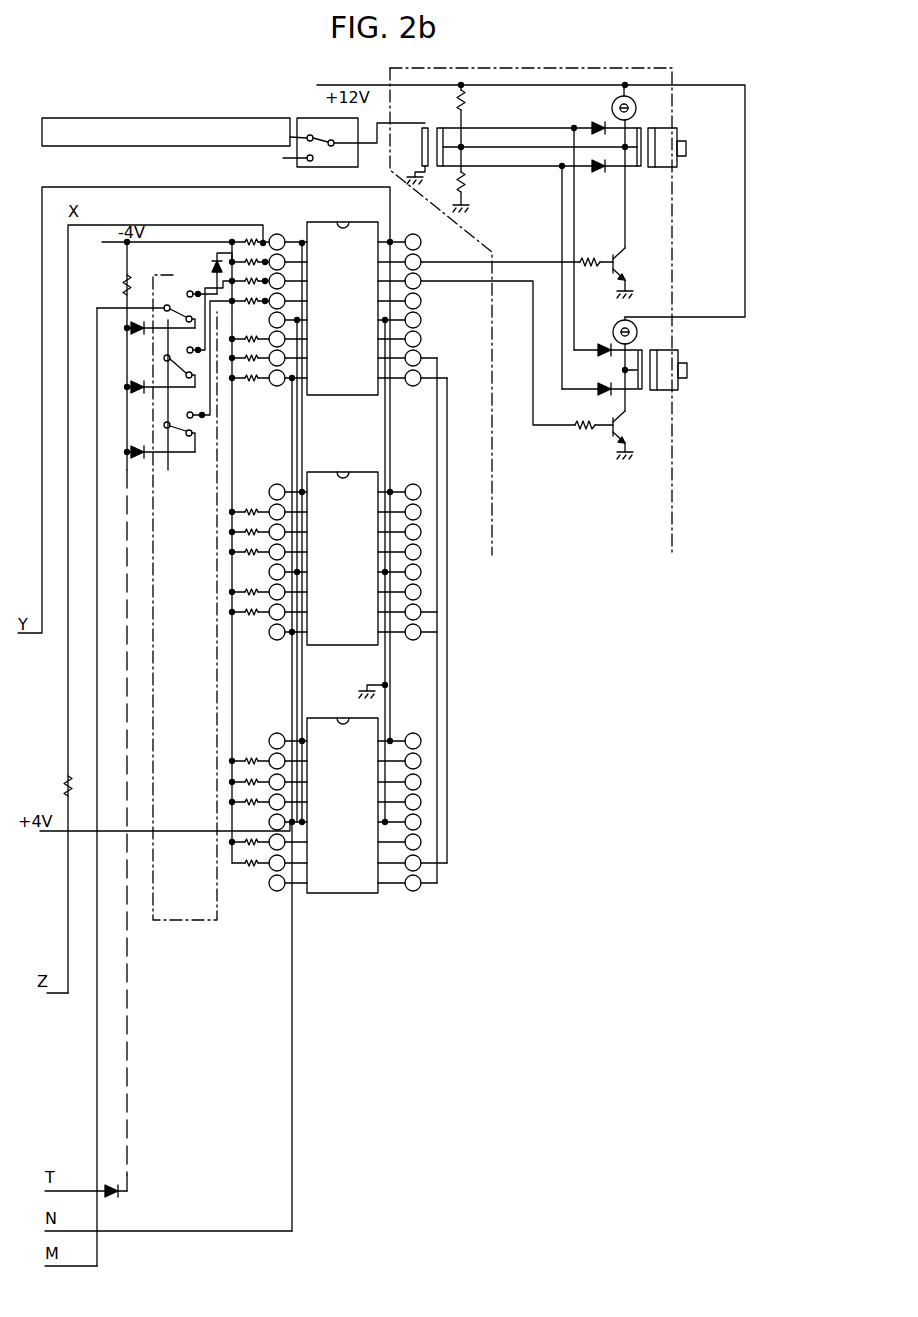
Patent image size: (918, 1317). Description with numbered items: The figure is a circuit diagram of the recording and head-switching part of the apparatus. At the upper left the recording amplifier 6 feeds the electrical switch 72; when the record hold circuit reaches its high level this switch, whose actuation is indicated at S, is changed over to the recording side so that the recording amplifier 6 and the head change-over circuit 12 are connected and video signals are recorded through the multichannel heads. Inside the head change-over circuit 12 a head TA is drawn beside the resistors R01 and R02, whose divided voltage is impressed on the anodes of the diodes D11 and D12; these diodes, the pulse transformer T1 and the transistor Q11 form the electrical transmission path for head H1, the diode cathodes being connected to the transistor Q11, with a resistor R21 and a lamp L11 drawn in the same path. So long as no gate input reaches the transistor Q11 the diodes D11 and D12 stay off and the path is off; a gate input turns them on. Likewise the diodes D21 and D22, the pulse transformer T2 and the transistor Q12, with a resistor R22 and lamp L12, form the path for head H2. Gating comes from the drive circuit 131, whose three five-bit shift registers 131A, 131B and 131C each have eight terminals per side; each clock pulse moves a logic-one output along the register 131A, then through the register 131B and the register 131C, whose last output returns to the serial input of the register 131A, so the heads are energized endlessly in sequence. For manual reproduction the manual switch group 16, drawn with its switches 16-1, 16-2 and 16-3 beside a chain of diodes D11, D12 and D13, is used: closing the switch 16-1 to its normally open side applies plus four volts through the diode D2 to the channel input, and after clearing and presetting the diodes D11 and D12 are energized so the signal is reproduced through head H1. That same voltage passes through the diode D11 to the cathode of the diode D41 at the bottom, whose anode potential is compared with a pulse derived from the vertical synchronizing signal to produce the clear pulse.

The recording amplifier 6 is at (166, 132).
The electrical switch 72 is at (306, 118).
The switch actuator S is at (318, 169).
The head change-over circuit 12 is at (633, 76).
The audio head TA is at (433, 126).
The resistor R01 is at (467, 107).
The resistor R02 is at (468, 192).
The diode D11 is at (591, 126).
The diode D12 is at (591, 164).
The diode D13 is at (122, 460).
The lamp L11 is at (612, 108).
The pulse transformer T1 is at (644, 128).
The head H1 is at (688, 148).
The transistor Q11 is at (625, 260).
The resistor R21 is at (588, 261).
The lamp L12 is at (615, 326).
The diode D21 is at (604, 347).
The diode D22 is at (600, 387).
The pulse transformer T2 is at (648, 350).
The head H2 is at (687, 370).
The transistor Q12 is at (624, 420).
The resistor R22 is at (576, 424).
The manual switch group 16 is at (164, 581).
The switch 16-1 is at (157, 296).
The relay contact 16-2 is at (181, 335).
The relay contact 16-3 is at (181, 377).
The diode D2 is at (217, 258).
The diode D41 is at (116, 1200).
The drive circuit 131 is at (350, 222).
The shift register 131A is at (339, 308).
The shift register 131B is at (334, 558).
The shift register 131C is at (339, 805).